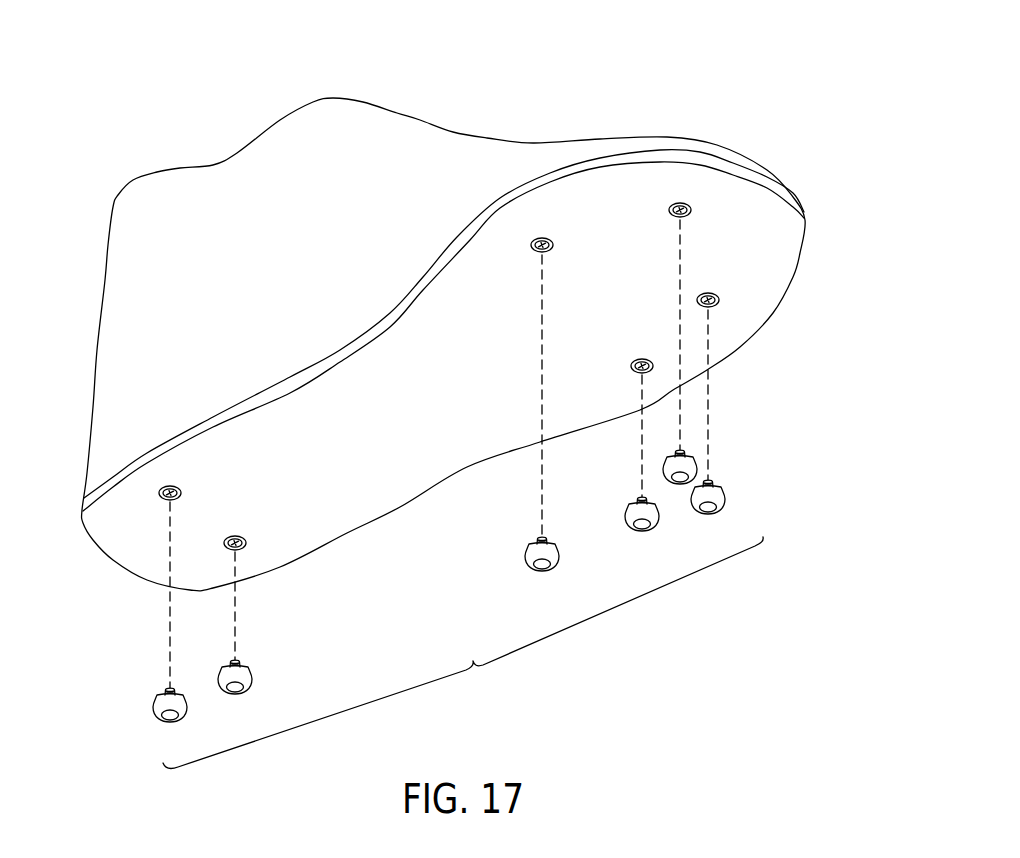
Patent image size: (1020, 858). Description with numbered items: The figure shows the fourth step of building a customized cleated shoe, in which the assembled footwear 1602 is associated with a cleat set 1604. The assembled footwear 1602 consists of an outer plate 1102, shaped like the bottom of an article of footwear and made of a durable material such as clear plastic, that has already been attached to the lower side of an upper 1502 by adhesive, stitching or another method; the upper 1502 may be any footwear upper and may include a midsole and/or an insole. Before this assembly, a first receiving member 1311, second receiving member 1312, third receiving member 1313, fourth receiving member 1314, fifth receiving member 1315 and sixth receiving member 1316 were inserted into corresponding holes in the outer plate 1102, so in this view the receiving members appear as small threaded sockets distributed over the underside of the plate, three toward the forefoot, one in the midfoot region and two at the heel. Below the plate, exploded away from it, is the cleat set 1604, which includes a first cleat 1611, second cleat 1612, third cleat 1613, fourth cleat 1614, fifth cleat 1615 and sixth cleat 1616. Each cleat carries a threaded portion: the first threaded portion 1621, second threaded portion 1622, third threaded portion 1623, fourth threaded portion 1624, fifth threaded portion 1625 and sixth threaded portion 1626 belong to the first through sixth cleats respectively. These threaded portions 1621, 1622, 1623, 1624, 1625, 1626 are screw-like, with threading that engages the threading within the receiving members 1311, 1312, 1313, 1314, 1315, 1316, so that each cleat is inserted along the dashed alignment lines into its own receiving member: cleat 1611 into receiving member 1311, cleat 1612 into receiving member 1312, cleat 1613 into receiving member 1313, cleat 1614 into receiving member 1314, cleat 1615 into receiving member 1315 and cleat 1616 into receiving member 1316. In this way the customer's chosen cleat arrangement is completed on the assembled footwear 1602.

The assembled footwear 1602 is at (452, 104).
The upper 1502 is at (606, 139).
The outer plate 1102 is at (340, 357).
The first receiving member 1311 is at (553, 245).
The second receiving member 1312 is at (692, 208).
The third receiving member 1313 is at (720, 300).
The fourth receiving member 1314 is at (633, 359).
The fifth receiving member 1315 is at (247, 542).
The sixth receiving member 1316 is at (182, 492).
The cleat set 1604 is at (446, 581).
The first cleat 1611 is at (534, 561).
The second cleat 1612 is at (680, 486).
The third cleat 1613 is at (722, 497).
The fourth cleat 1614 is at (640, 527).
The fifth cleat 1615 is at (248, 675).
The sixth cleat 1616 is at (167, 723).
The first threaded portion 1621 is at (537, 540).
The second threaded portion 1622 is at (688, 453).
The third threaded portion 1623 is at (715, 482).
The fourth threaded portion 1624 is at (636, 500).
The fifth threaded portion 1625 is at (243, 660).
The sixth threaded portion 1626 is at (165, 690).